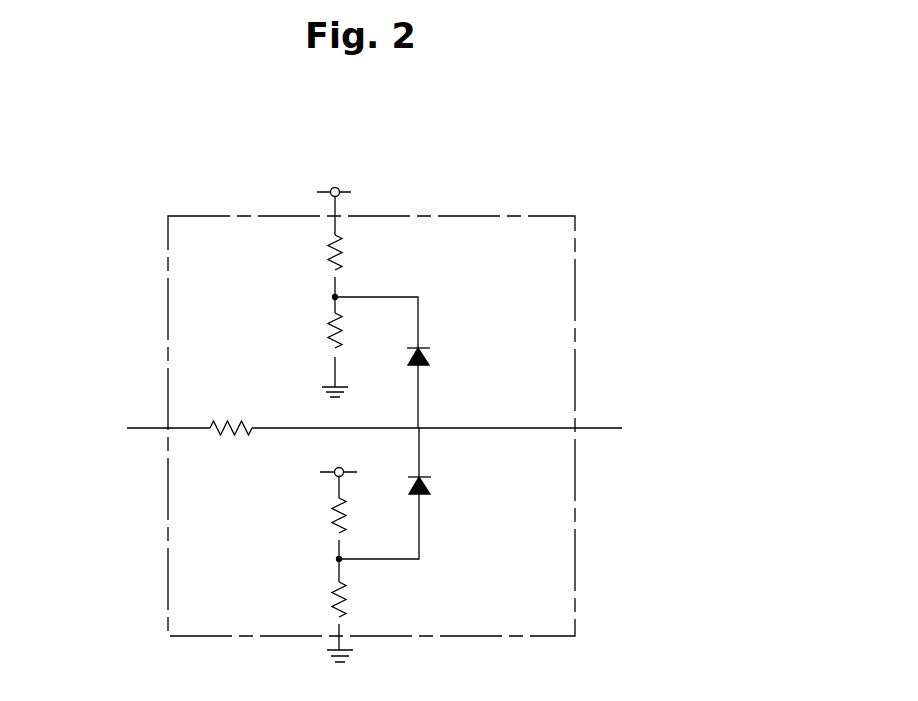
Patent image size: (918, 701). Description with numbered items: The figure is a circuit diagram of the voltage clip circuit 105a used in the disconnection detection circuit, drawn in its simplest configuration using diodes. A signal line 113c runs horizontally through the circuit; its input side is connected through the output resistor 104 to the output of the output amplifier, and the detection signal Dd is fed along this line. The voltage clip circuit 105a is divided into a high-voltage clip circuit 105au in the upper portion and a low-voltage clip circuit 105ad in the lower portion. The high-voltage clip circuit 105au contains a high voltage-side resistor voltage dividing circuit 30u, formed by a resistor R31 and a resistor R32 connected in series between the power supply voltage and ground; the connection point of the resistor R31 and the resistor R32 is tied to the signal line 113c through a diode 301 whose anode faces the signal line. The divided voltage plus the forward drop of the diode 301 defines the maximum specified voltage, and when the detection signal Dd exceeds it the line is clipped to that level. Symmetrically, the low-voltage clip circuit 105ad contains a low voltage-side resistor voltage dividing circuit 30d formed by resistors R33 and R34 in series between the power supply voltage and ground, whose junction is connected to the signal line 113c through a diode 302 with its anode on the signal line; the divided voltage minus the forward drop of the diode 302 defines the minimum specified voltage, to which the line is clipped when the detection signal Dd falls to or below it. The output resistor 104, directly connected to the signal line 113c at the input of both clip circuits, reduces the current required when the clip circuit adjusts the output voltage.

The voltage clip circuit 105a is at (520, 215).
The high-voltage clip circuit 105au is at (515, 263).
The low-voltage clip circuit 105ad is at (532, 568).
The high voltage-side resistor voltage dividing circuit 30u is at (208, 290).
The low voltage-side resistor voltage dividing circuit 30d is at (210, 573).
The resistor R31 is at (325, 267).
The resistor R32 is at (323, 345).
The resistor R33 is at (333, 527).
The resistor R34 is at (335, 602).
The diode 301 is at (430, 358).
The diode 302 is at (432, 487).
The output resistor 104 is at (223, 425).
The signal line 113c is at (482, 426).
The detection signal Dd is at (597, 426).